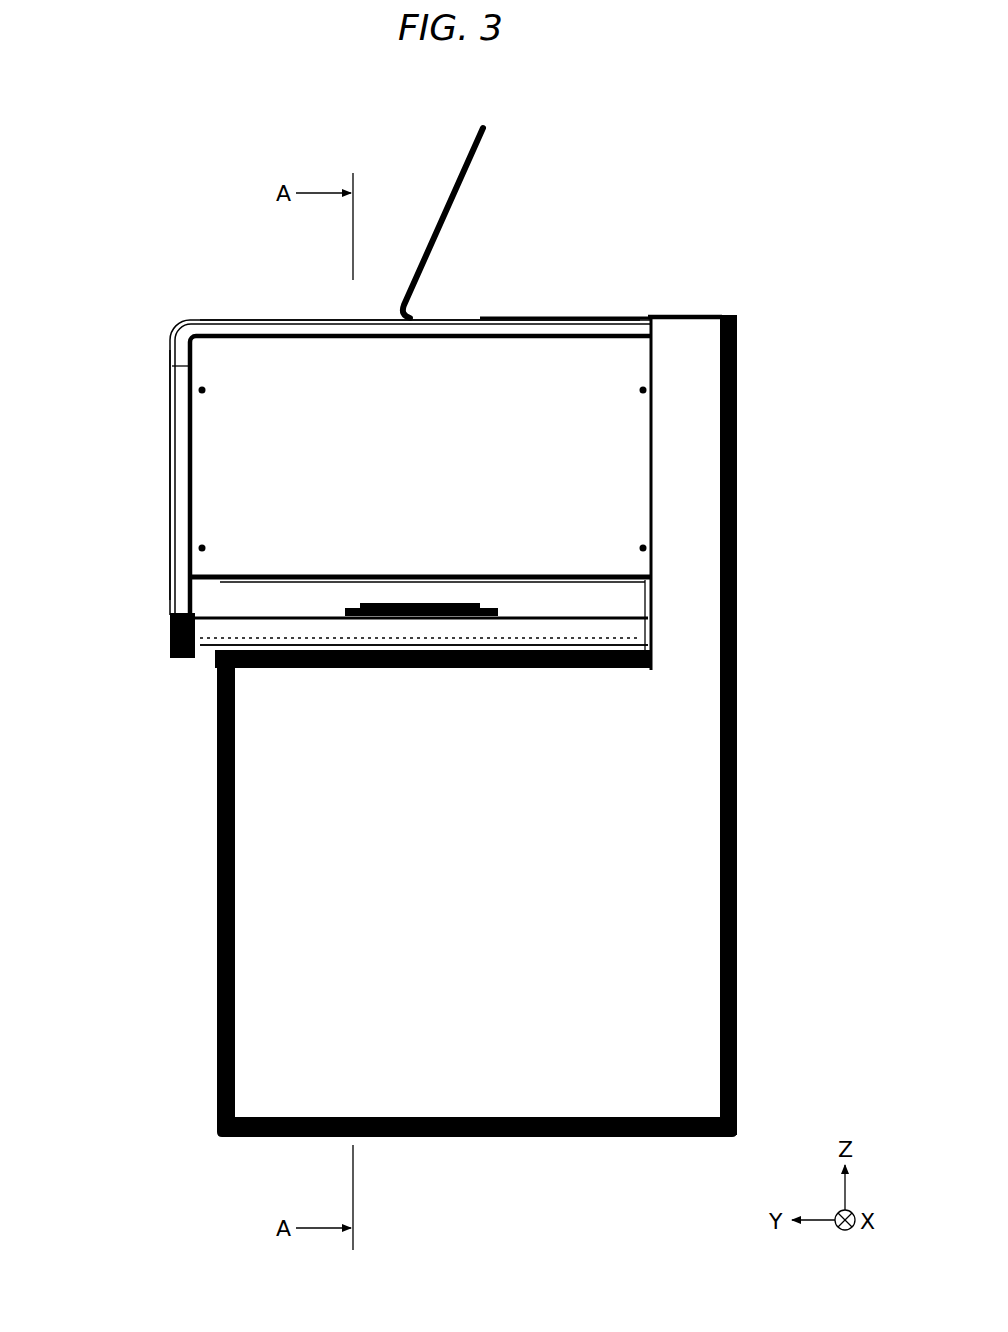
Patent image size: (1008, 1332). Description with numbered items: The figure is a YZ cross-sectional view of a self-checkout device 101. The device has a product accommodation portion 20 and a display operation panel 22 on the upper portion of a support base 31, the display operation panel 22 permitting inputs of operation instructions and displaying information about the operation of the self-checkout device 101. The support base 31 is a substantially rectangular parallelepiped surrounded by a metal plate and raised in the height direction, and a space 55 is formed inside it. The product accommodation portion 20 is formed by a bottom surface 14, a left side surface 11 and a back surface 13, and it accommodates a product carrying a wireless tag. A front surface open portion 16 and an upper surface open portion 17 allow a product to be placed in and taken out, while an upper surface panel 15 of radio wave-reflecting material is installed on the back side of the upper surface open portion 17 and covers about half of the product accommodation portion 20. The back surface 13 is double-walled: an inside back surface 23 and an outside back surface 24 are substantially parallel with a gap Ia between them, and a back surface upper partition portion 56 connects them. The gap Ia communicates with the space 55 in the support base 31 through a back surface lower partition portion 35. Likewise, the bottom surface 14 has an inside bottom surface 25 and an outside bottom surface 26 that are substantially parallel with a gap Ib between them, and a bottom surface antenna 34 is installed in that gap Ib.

The self-checkout device 101 is at (688, 130).
The left side surface 11 is at (172, 366).
The back surface 13 is at (843, 398).
The bottom surface 14 is at (80, 543).
The upper surface panel 15 is at (518, 316).
The front surface open portion 16 is at (168, 438).
The upper surface open portion 17 is at (236, 314).
The product accommodation portion 20 is at (324, 408).
The display operation panel 22 is at (478, 130).
The inside back surface 23 is at (653, 410).
The outside back surface 24 is at (738, 453).
The inside bottom surface 25 is at (256, 575).
The outside bottom surface 26 is at (252, 617).
The support base 31 is at (215, 900).
The bottom surface antenna 34 is at (362, 604).
The back surface lower partition portion 35 is at (681, 678).
The space 55 is at (602, 876).
The back surface upper partition portion 56 is at (688, 313).
The gap Ia is at (612, 506).
The gap Ib is at (505, 687).